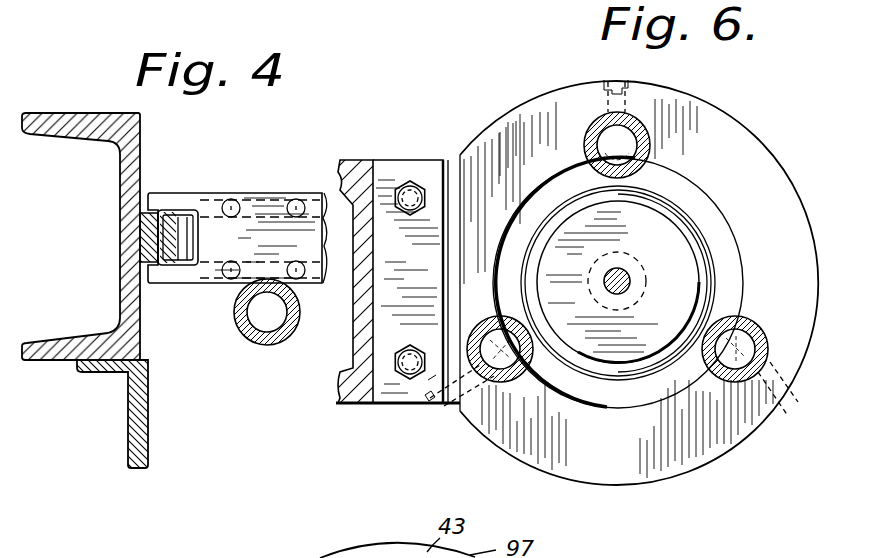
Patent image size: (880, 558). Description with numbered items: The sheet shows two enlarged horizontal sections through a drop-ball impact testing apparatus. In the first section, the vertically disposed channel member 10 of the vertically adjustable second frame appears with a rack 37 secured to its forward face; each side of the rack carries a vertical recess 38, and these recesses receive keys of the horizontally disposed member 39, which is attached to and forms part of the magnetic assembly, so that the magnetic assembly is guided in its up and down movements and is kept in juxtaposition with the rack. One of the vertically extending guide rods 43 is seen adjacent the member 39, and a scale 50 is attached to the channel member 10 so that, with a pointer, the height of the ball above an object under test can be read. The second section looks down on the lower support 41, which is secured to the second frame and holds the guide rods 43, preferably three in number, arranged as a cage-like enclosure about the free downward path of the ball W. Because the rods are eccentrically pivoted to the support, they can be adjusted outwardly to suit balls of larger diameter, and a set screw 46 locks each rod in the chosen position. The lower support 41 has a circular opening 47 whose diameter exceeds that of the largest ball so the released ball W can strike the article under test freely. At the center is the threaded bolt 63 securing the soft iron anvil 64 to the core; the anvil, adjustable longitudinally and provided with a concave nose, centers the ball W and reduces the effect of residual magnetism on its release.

In FIG. 4, the channel member 10 is at (109, 113).
In FIG. 4, the rack 37 is at (150, 233).
In FIG. 4, the recess 38 is at (148, 250).
In FIG. 4, the horizontally disposed member 39 is at (214, 192).
In FIG. 6, the lower support 41 is at (678, 485).
In FIG. 4, the guide rod 43 is at (256, 347).
In FIG. 6, the guide rod 43 is at (650, 136).
In FIG. 4, the set screw 46 is at (455, 404).
In FIG. 6, the set screw 46 is at (603, 79).
In FIG. 6, the circular opening 47 is at (733, 265).
In FIG. 4, the scale 50 is at (152, 452).
In FIG. 6, the threaded bolt 63 is at (631, 280).
In FIG. 6, the anvil 64 is at (660, 222).
In FIG. 6, the ball W is at (607, 380).